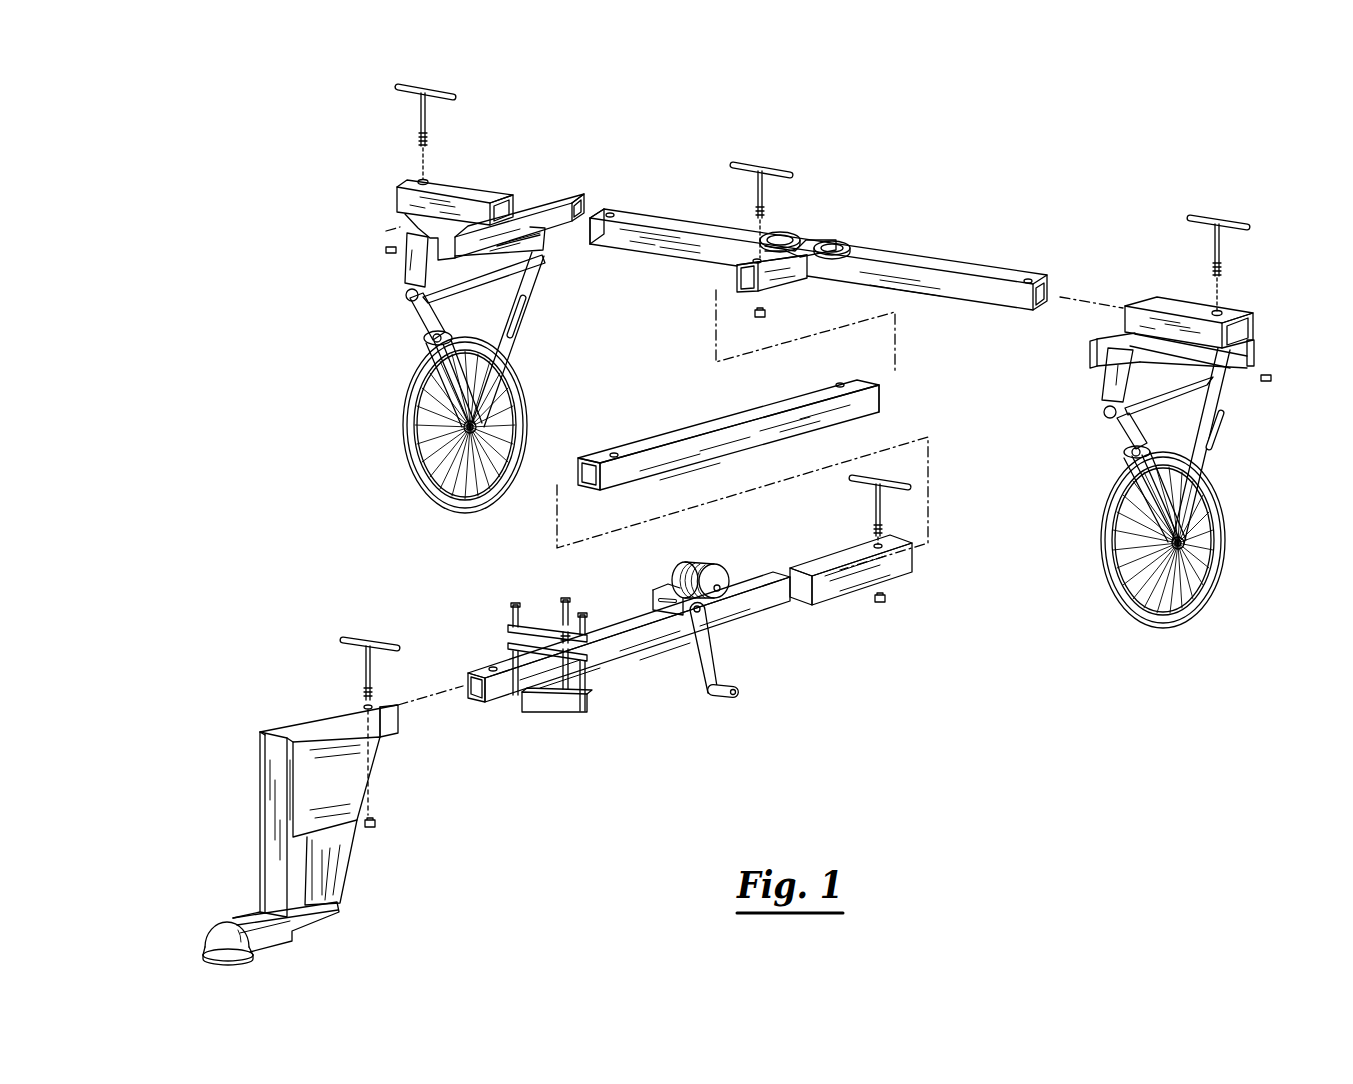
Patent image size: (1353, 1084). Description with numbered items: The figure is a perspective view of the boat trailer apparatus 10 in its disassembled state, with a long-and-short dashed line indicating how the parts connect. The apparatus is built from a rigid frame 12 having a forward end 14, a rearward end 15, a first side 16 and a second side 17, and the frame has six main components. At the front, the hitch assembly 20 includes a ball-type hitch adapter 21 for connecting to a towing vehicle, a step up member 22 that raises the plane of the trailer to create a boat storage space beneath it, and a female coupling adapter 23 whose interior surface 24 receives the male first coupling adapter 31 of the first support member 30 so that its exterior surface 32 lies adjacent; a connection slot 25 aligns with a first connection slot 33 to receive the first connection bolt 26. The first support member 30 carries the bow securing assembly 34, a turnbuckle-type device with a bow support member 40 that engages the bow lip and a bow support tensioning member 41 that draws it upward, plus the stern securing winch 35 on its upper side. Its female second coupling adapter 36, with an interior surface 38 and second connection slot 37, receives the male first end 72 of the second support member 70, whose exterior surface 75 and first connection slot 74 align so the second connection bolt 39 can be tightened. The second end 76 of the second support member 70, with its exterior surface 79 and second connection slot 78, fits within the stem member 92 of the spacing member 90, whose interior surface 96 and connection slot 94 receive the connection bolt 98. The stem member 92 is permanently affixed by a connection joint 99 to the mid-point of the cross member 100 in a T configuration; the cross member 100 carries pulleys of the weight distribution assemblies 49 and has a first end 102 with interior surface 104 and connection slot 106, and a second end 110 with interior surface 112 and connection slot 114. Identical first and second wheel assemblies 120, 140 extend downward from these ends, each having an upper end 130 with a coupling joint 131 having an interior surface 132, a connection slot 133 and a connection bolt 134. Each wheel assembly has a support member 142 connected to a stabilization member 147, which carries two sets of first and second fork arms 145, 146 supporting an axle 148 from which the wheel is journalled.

The boat trailer apparatus 10 is at (283, 584).
The rigid frame 12 is at (295, 670).
The forward end 14 is at (240, 755).
The rearward end 15 is at (960, 180).
The first side 16 is at (912, 662).
The second side 17 is at (425, 556).
The hitch assembly 20 is at (262, 800).
The hitch adapter 21 is at (215, 925).
The step up member 22 is at (357, 762).
The coupling adapter 23 is at (382, 702).
The interior surface 24 is at (390, 706).
The connection slot 25 is at (364, 705).
The first connection bolt 26 is at (358, 640).
The first support member 30 is at (740, 616).
The first coupling adapter 31 is at (472, 700).
The exterior surface 32 is at (489, 666).
The first connection slot 33 is at (493, 666).
The bow securing assembly 34 is at (565, 628).
The stern securing winch 35 is at (712, 698).
The second coupling adapter 36 is at (845, 590).
The second connection slot 37 is at (876, 542).
The interior surface 38 is at (913, 560).
The second connection bolt 39 is at (905, 481).
The bow support member 40 is at (553, 712).
The bow support tensioning member 41 is at (562, 604).
The weight distribution assemblies 49 is at (806, 240).
The second support member 70 is at (680, 432).
The first end 72 is at (590, 482).
The first connection slot 74 is at (612, 452).
The exterior surface 75 is at (612, 480).
The second end 76 is at (840, 383).
The second connection slot 78 is at (882, 392).
The exterior surface 79 is at (864, 397).
The spacing member 90 is at (898, 254).
The stem member 92 is at (783, 268).
The connection slot 94 is at (756, 258).
The interior surface 96 is at (740, 290).
The connection bolt 98 is at (762, 164).
The connection joint 99 is at (800, 272).
The cross member 100 is at (878, 140).
The first end 102 is at (1048, 280).
The interior surface 104 is at (1038, 300).
The connection slot 106 is at (1027, 280).
The second end 110 is at (605, 212).
The interior surface 112 is at (585, 238).
The connection slot 114 is at (613, 214).
The first wheel assembly 120 is at (1155, 298).
The upper end 130 is at (455, 185).
The coupling joint 131 is at (418, 181).
The interior surface 132 is at (537, 207).
The connection slot 133 is at (426, 178).
The connection bolt 134 is at (398, 88).
The second wheel assembly 140 is at (502, 195).
The support member 142 is at (1102, 368).
The first fork arm 145 is at (1167, 440).
The second fork arm 146 is at (1128, 440).
The stabilization member 147 is at (1102, 408).
The axle 148 is at (1185, 543).